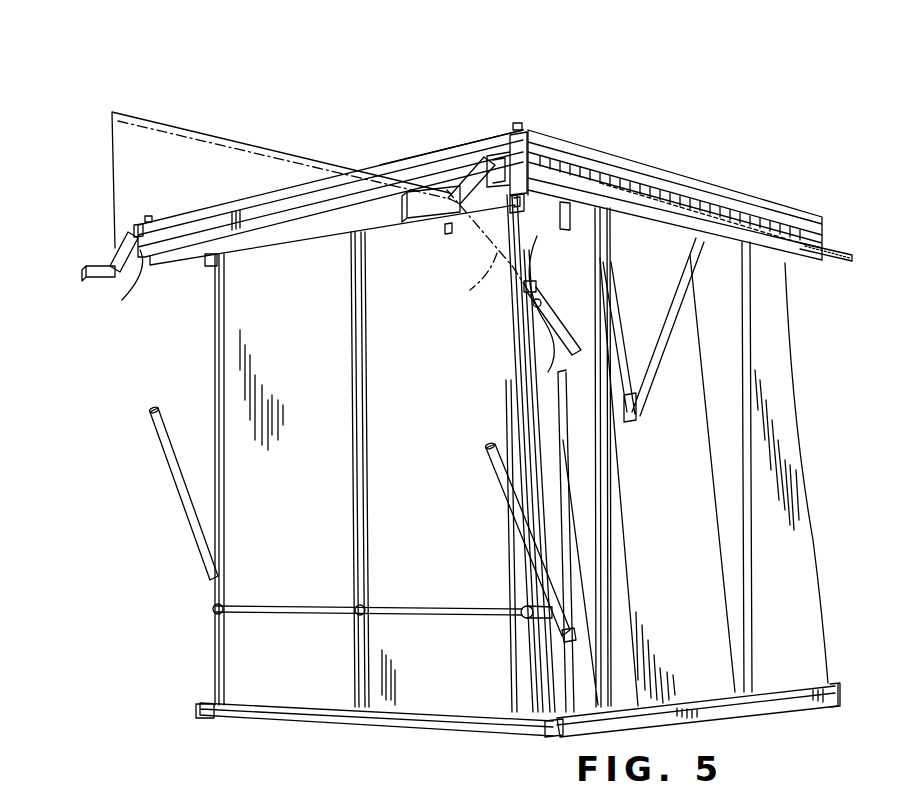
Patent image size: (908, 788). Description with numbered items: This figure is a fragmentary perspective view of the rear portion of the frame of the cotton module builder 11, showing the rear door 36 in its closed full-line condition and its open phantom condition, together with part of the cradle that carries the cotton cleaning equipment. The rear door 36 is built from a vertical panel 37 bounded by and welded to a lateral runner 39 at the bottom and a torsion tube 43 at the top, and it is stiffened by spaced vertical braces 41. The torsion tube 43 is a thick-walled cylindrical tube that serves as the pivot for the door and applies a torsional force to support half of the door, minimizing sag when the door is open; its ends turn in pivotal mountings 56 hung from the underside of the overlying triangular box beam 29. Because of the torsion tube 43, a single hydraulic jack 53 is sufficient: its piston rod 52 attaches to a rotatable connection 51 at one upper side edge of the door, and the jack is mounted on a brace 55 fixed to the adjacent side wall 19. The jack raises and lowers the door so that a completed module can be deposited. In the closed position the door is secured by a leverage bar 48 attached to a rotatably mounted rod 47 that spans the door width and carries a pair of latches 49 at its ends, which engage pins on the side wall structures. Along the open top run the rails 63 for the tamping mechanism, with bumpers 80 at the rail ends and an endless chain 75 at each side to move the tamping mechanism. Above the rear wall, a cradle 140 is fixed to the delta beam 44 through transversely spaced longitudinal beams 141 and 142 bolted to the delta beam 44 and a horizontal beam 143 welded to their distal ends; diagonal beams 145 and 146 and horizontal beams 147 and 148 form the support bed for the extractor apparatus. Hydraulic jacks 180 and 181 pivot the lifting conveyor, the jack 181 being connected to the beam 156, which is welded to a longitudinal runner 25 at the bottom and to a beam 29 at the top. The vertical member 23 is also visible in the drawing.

The cotton module builder 11 is at (661, 118).
The side wall 19 is at (788, 302).
The side post 23 is at (728, 564).
The longitudinal runner 25 is at (214, 721).
The triangular box beam 29 is at (822, 231).
The rear door 36 is at (212, 128).
The vertical panel 37 is at (313, 520).
The lateral runner 39 is at (318, 718).
The vertical braces 41 is at (226, 322).
The torsion tube 43 is at (287, 250).
The delta beam 44 is at (426, 158).
The rod 47 is at (438, 606).
The leverage bar 48 is at (508, 521).
The latches 49 is at (525, 620).
The rotatable connection 51 is at (538, 286).
The piston rod 52 is at (530, 303).
The hydraulic jack 53 is at (550, 326).
The brace 55 is at (630, 382).
The pivotal mounting 56 is at (205, 263).
The rails 63 is at (135, 227).
The endless chain 75 is at (770, 220).
The bumpers 80 is at (151, 216).
The cradle 140 is at (445, 222).
The longitudinally extending beam 141 is at (497, 150).
The longitudinally extending beam 142 is at (130, 286).
The horizontally disposed beam 143 is at (276, 210).
The diagonal beam 145 is at (477, 168).
The diagonal beam 146 is at (126, 233).
The horizontal beam 147 is at (423, 220).
The horizontal beam 148 is at (98, 264).
The beam 156 is at (566, 480).
The hydraulic jack 180 is at (170, 436).
The hydraulic jack 181 is at (489, 462).